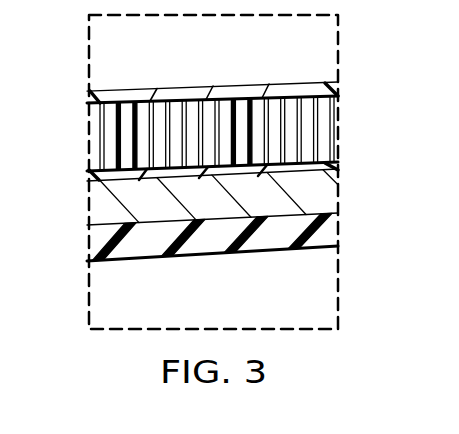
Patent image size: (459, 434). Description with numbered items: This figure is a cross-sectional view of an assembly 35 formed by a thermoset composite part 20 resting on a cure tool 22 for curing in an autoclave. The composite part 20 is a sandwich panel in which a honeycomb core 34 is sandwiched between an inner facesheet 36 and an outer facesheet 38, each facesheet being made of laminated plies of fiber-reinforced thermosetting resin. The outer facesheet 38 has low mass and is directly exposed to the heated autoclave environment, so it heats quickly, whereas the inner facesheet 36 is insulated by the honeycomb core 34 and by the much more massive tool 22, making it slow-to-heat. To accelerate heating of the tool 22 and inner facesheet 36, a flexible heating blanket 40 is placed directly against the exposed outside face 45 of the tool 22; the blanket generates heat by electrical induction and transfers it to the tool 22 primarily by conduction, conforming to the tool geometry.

The composite part 20 is at (157, 74).
The cure tool 22 is at (212, 262).
The honeycomb core 34 is at (236, 113).
The assembly 35 is at (85, 97).
The inner facesheet 36 is at (176, 173).
The outer facesheet 38 is at (295, 88).
The heating blanket 40 is at (199, 242).
The outside face of the tool 45 is at (218, 216).